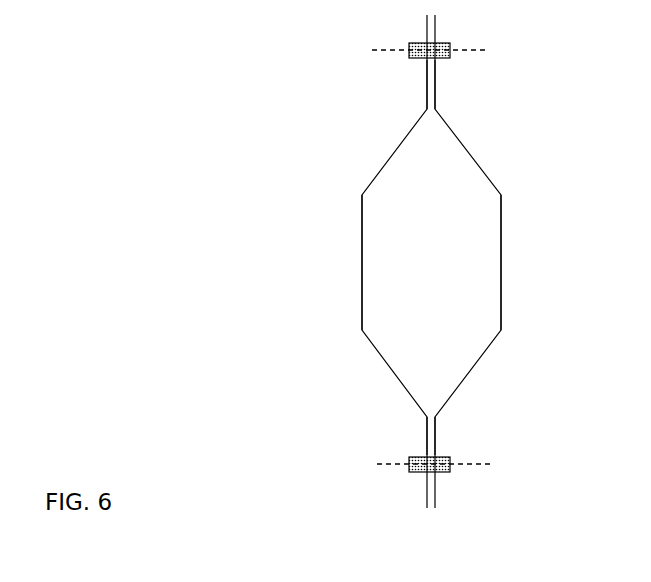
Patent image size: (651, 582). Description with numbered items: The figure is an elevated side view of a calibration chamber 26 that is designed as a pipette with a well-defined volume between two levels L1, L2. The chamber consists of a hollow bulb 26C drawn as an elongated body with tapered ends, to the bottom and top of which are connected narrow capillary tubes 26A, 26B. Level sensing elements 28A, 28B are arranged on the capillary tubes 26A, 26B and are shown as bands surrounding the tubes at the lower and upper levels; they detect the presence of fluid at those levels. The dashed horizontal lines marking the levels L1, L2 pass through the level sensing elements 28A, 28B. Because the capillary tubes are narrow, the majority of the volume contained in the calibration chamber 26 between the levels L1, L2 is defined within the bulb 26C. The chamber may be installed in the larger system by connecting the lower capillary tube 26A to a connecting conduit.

The calibration chamber 26 is at (342, 220).
The capillary tube 26A is at (435, 438).
The capillary tube 26B is at (434, 73).
The hollow bulb 26C is at (501, 250).
The level sensing element 28A is at (447, 457).
The level sensing element 28B is at (447, 43).
The level L1 is at (418, 463).
The level L2 is at (415, 50).